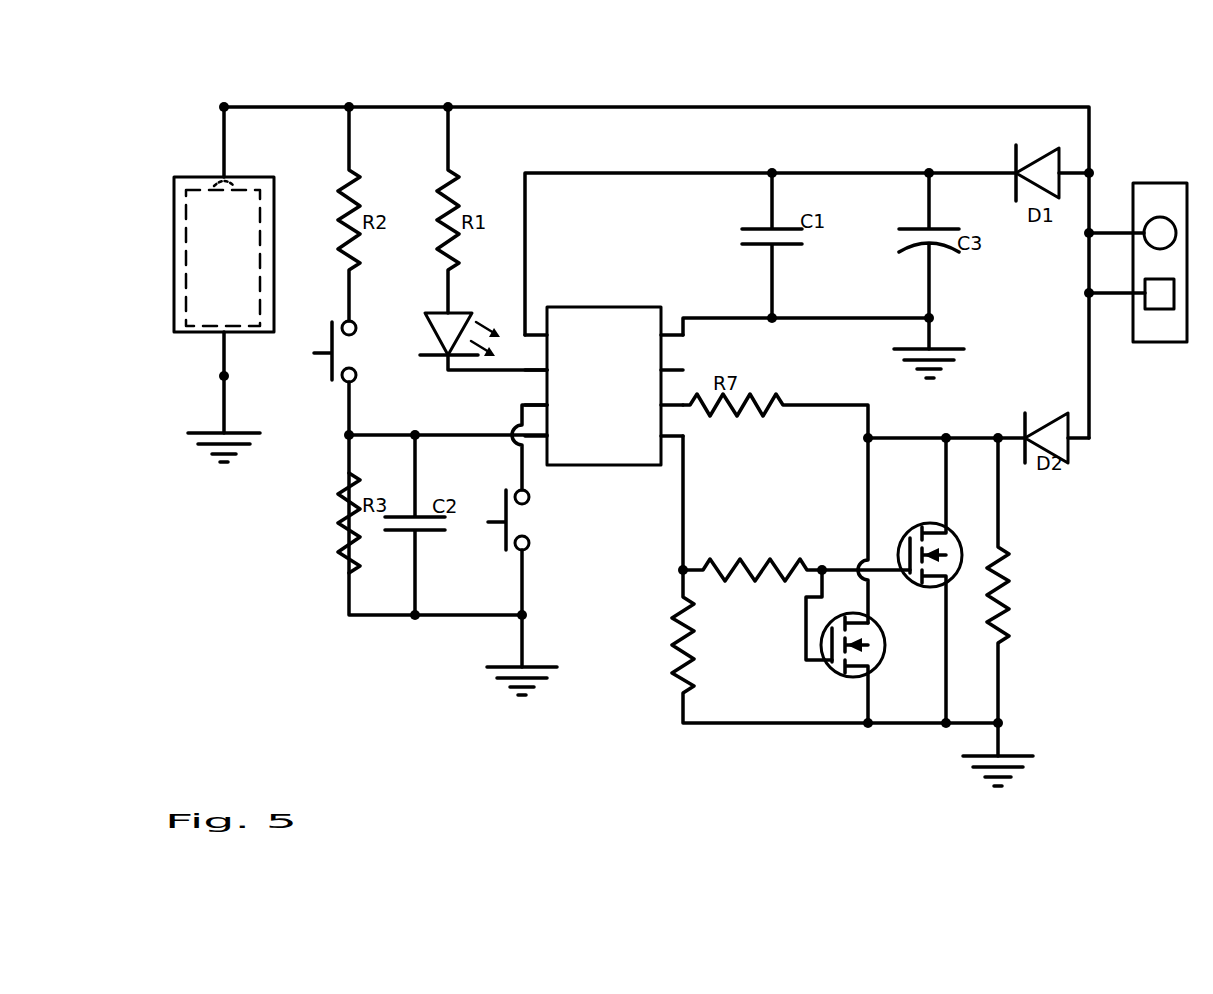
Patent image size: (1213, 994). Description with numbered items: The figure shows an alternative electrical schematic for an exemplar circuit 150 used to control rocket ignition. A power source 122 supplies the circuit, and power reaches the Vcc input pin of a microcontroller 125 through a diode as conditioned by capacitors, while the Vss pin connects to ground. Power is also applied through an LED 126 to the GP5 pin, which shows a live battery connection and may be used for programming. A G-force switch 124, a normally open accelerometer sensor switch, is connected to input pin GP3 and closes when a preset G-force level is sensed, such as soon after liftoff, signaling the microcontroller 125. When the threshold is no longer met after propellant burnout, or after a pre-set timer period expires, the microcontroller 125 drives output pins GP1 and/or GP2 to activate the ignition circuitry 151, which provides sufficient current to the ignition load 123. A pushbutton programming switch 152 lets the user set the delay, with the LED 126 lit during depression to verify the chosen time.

The circuit 150 is at (227, 81).
The power source 122 is at (196, 334).
The ignition load 123 is at (1172, 181).
The G-force switch 124 is at (332, 380).
The microcontroller 125 is at (617, 307).
The LED 126 is at (428, 314).
The ignition circuitry 151 is at (808, 503).
The programming switch 152 is at (505, 537).